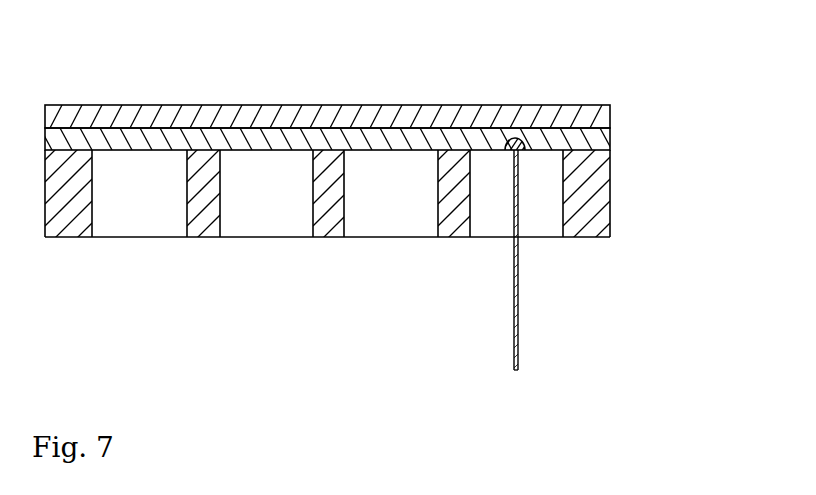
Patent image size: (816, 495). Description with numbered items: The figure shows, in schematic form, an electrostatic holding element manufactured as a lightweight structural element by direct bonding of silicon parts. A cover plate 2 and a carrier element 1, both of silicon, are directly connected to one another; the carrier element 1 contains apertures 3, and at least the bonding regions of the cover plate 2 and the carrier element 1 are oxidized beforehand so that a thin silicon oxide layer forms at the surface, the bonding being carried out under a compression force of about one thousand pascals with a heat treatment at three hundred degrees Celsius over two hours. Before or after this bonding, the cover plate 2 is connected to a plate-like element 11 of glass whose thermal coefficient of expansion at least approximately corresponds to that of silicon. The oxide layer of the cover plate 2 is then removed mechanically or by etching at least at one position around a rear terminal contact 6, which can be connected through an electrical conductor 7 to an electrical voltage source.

The carrier element 1 is at (592, 222).
The cover plate 2 is at (598, 143).
The apertures 3 is at (495, 192).
The rear terminal contact 6 is at (512, 137).
The electrical conductor 7 is at (518, 343).
The plate-like element 11 is at (598, 108).